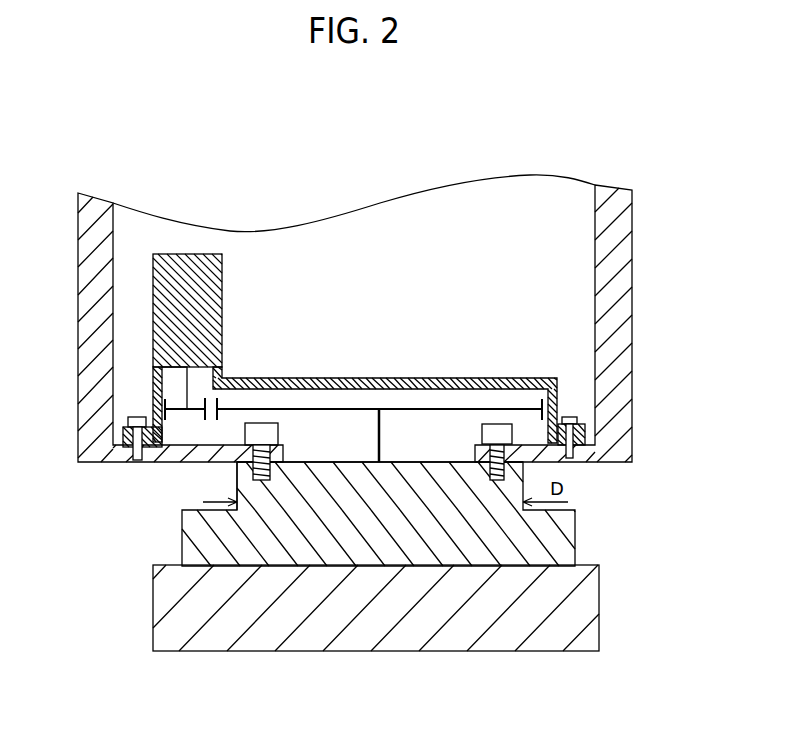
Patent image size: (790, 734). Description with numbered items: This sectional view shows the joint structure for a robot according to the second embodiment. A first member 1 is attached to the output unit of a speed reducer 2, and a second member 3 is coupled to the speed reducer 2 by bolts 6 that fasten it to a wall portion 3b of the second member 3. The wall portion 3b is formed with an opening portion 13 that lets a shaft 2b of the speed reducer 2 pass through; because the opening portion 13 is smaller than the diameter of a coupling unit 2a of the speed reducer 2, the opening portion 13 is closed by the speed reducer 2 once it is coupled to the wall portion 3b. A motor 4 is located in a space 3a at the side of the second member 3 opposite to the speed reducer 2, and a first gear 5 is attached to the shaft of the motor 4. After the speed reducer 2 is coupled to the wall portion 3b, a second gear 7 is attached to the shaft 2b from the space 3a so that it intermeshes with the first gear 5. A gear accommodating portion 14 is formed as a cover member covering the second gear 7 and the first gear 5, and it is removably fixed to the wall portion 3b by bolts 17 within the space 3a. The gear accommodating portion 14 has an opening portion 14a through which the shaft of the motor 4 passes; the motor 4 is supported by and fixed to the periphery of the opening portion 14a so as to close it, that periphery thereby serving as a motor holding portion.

The first member 1 is at (560, 603).
The speed reducer 2 is at (597, 470).
The coupling unit 2a is at (237, 483).
The shaft 2b is at (378, 430).
The second member 3 is at (612, 337).
The space 3a is at (487, 205).
The wall portion 3b is at (170, 450).
The motor 4 is at (153, 288).
The first gear 5 is at (200, 412).
The bolts 6 is at (557, 385).
The second gear 7 is at (469, 409).
The opening portion 13 is at (422, 453).
The gear accommodating portion 14 is at (518, 378).
The opening portion 14a is at (205, 377).
The bolts 17 is at (138, 417).